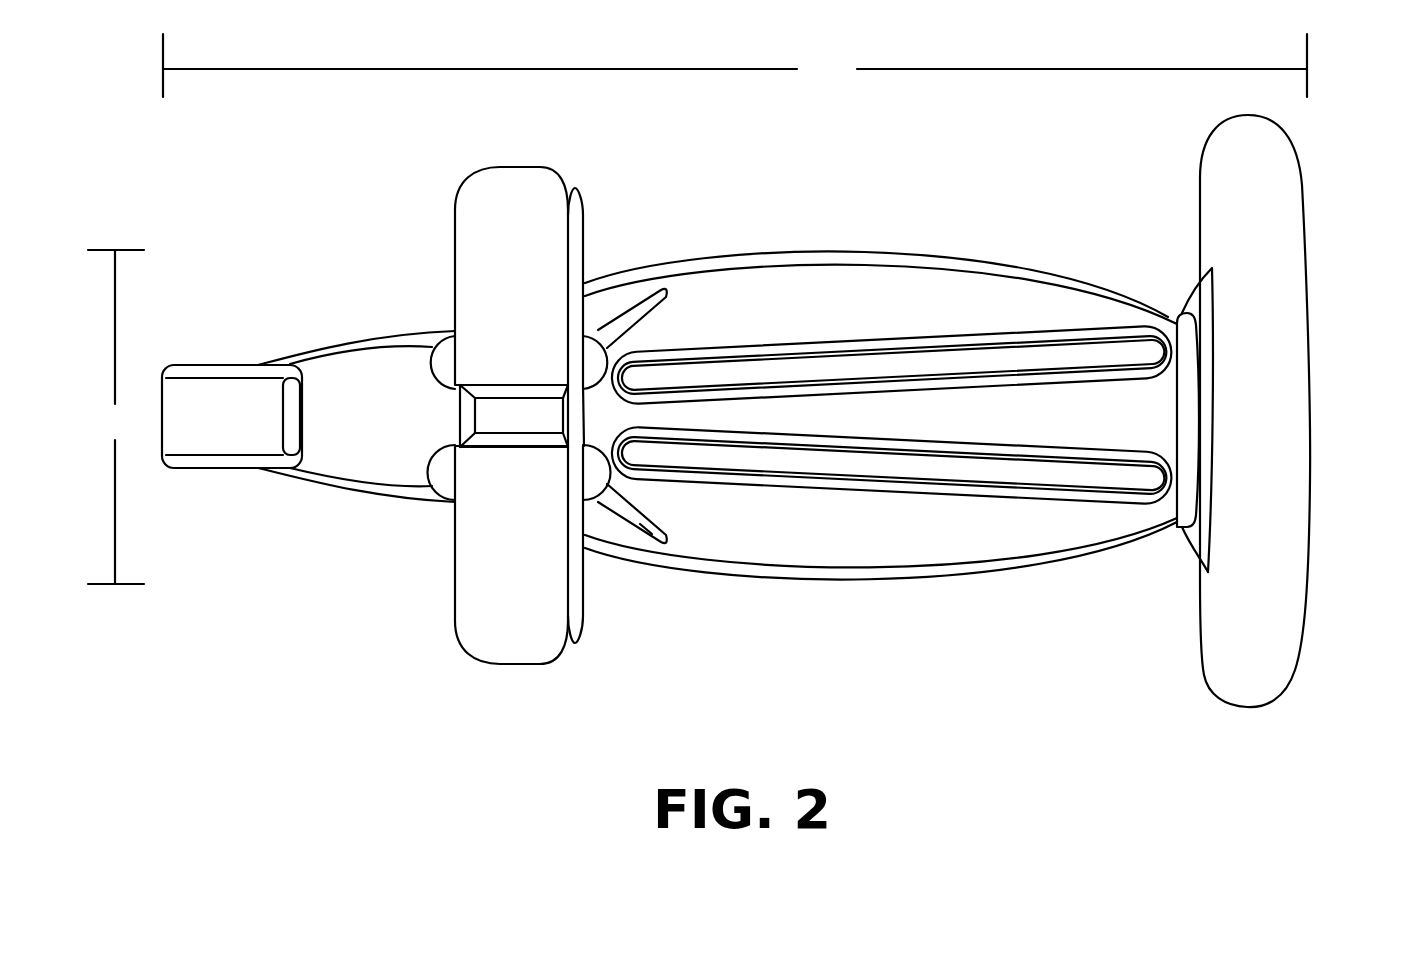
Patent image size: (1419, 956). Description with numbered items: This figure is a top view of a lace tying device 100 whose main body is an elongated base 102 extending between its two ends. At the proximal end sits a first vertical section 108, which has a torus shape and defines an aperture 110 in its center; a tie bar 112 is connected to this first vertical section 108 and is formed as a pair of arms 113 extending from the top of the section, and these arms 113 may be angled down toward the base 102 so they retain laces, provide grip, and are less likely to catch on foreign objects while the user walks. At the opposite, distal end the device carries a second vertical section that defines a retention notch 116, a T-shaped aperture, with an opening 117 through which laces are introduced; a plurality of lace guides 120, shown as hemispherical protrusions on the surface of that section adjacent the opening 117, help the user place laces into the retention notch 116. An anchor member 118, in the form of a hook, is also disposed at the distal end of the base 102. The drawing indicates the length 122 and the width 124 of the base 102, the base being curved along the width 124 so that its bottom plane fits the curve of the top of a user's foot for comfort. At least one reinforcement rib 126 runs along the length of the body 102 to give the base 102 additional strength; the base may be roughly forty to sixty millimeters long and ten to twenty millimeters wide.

The lace tying device 100 is at (224, 224).
The base 102 is at (878, 542).
The first vertical section 108 is at (1203, 530).
The aperture 110 is at (1188, 370).
The tie bar 112 is at (1262, 410).
The arms 113 is at (1248, 202).
The retention notch 116 is at (497, 292).
The opening 117 is at (440, 343).
The anchor member 118 is at (235, 443).
The lace guides 120 is at (590, 360).
The length 122 is at (735, 65).
The width 124 is at (116, 417).
The reinforcement rib 126 is at (848, 372).